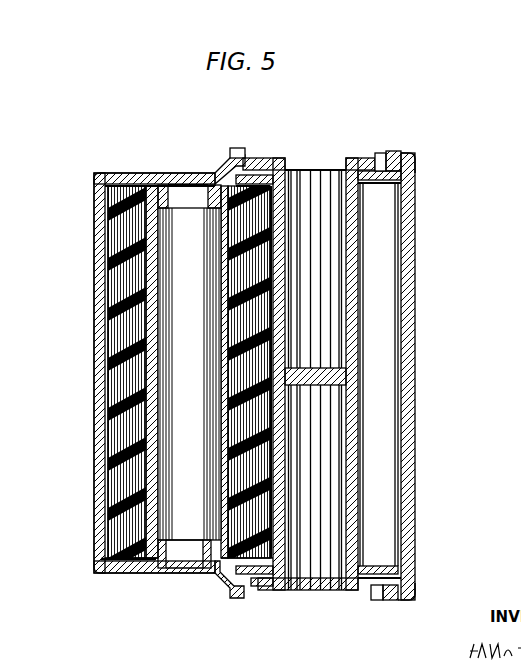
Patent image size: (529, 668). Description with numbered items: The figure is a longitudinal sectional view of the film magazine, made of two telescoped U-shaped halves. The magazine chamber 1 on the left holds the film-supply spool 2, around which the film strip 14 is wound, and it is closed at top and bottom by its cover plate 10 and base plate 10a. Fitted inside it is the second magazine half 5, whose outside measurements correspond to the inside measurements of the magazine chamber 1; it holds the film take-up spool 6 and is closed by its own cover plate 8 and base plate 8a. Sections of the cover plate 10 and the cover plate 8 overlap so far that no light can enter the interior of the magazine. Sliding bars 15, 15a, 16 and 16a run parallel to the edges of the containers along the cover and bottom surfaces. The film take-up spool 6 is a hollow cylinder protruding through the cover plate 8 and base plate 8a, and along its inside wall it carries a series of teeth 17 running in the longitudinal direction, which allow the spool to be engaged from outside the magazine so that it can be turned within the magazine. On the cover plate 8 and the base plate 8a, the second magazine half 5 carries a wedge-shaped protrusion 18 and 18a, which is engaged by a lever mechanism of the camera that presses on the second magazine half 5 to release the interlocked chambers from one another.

The magazine chamber 1 is at (92, 290).
The film-supply spool 2 is at (210, 565).
The second magazine half 5 is at (400, 350).
The film take-up spool 6 is at (275, 580).
The cover plate 8 is at (365, 160).
The base plate 8a is at (362, 580).
The cover plate 10 is at (102, 168).
The base plate 10a is at (110, 566).
The film strip 14 is at (110, 422).
The sliding bar 15 is at (228, 144).
The sliding bar 15a is at (226, 592).
The sliding bar 16 is at (408, 156).
The sliding bar 16a is at (406, 585).
The series of teeth 17 is at (312, 170).
The wedge-shaped protrusion 18 is at (386, 143).
The wedge-shaped protrusion 18a is at (372, 592).